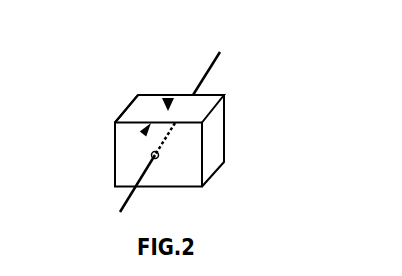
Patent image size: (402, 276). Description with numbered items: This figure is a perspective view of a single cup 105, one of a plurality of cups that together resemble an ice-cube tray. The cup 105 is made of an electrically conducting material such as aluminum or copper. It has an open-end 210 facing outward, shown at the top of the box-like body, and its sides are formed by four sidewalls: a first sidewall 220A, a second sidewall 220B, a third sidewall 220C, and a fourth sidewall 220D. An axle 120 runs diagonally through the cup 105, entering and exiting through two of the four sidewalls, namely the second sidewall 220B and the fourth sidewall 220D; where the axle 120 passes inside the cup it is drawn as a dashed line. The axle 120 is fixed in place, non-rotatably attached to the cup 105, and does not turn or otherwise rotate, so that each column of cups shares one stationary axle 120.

The cup 105 is at (142, 134).
The axle 120 is at (122, 208).
The open-end 210 is at (167, 97).
The first sidewall 220A is at (133, 112).
The second sidewall 220B is at (183, 106).
The third sidewall 220C is at (215, 140).
The fourth sidewall 220D is at (165, 172).